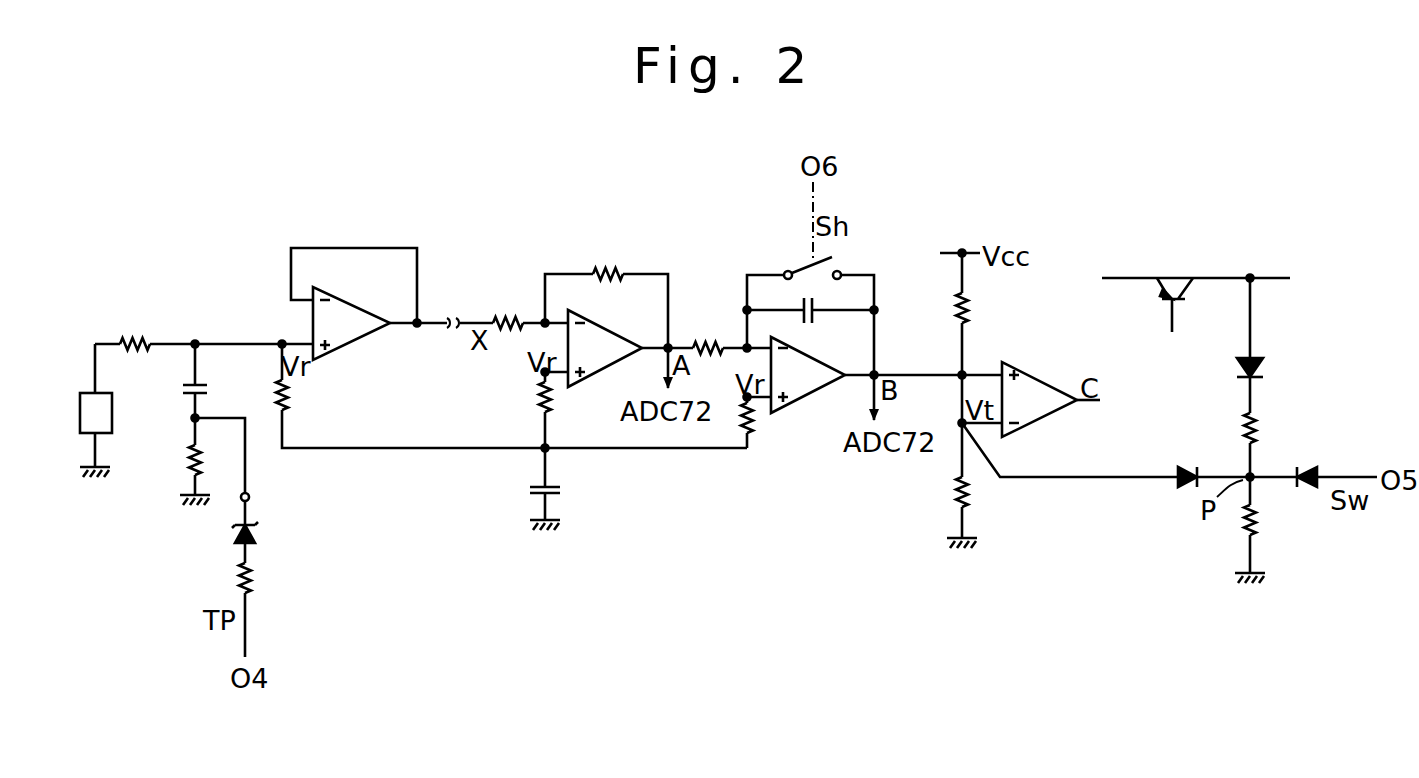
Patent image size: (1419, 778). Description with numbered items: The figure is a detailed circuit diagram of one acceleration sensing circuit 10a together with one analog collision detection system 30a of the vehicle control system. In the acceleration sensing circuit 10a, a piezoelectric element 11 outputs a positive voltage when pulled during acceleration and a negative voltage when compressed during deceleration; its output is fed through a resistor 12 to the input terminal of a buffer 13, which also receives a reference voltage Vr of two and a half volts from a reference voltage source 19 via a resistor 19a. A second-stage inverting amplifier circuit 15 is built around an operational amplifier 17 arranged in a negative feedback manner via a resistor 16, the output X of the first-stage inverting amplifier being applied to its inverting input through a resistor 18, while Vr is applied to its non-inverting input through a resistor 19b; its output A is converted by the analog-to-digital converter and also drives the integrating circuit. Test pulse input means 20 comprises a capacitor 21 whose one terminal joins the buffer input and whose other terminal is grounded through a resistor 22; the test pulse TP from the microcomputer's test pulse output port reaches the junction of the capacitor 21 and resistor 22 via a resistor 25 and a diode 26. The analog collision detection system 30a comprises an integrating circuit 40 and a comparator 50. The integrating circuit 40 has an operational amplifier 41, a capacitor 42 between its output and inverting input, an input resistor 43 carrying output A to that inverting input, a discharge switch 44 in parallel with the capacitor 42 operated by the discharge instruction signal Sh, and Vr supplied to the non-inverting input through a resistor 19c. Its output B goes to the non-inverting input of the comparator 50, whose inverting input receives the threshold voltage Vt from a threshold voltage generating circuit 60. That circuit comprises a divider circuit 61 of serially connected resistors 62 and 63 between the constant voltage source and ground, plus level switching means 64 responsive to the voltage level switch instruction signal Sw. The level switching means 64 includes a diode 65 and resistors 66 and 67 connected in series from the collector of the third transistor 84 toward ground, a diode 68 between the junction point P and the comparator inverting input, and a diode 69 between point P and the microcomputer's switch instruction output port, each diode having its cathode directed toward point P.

The acceleration sensing circuit 10a is at (215, 303).
The piezoelectric element 11 is at (78, 408).
The resistor 12 is at (135, 338).
The buffer 13 is at (358, 338).
The second-stage inverting amplifier circuit 15 is at (560, 262).
The resistor 16 is at (604, 265).
The operational amplifier 17 is at (612, 338).
The resistor 18 is at (500, 318).
The reference voltage source 19 is at (530, 493).
The resistor 19a is at (290, 396).
The resistor 19b is at (537, 403).
The resistor 19c is at (752, 432).
The test pulse input means 20 is at (165, 432).
The capacitor 21 is at (180, 390).
The resistor 22 is at (183, 460).
The resistor 25 is at (255, 580).
The diode 26 is at (258, 533).
The analog collision detection system 30a is at (872, 260).
The integrating circuit 40 is at (781, 263).
The operational amplifier 41 is at (795, 405).
The capacitor 42 is at (814, 318).
The input resistor 43 is at (704, 336).
The discharge switch 44 is at (830, 262).
The comparator 50 is at (1038, 374).
The threshold voltage generating circuit 60 is at (1175, 500).
The divider circuit 61 is at (938, 462).
The resistor 62 is at (970, 310).
The resistor 63 is at (945, 488).
The level switching means 64 is at (1272, 440).
The diode 65 is at (1265, 370).
The resistor 66 is at (1258, 428).
The resistor 67 is at (1255, 527).
The diode 68 is at (1186, 463).
The diode 69 is at (1310, 470).
The third transistor 84 is at (1178, 278).